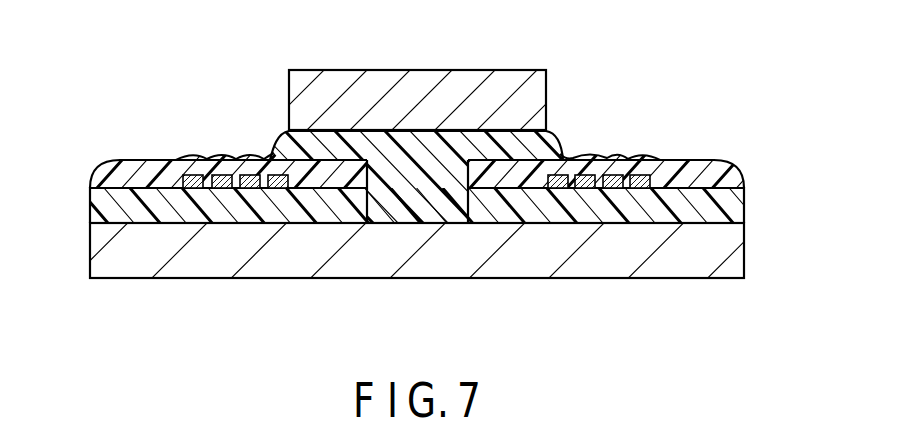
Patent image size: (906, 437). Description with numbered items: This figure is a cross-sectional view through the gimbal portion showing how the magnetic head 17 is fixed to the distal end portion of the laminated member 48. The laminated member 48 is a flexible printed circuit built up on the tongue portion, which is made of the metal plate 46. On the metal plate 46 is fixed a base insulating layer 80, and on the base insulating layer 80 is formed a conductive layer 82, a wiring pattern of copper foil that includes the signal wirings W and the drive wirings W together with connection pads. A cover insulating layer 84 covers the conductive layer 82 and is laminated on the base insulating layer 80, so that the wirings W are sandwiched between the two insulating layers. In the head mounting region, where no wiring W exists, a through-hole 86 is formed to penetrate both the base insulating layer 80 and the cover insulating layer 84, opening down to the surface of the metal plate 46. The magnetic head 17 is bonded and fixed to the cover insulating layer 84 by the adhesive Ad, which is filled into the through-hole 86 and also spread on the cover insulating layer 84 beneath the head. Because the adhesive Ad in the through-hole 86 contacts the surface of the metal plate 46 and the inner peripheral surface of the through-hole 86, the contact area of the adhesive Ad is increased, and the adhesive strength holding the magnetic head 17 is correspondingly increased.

The magnetic head 17 is at (315, 82).
The metal plate 46 is at (588, 268).
The laminated member 48 is at (426, 210).
The base insulating layer 80 is at (95, 204).
The conductive layer 82 is at (193, 168).
The cover insulating layer 84 is at (148, 163).
The through-hole 86 is at (466, 210).
The adhesive Ad is at (429, 220).
The wiring W is at (417, 139).